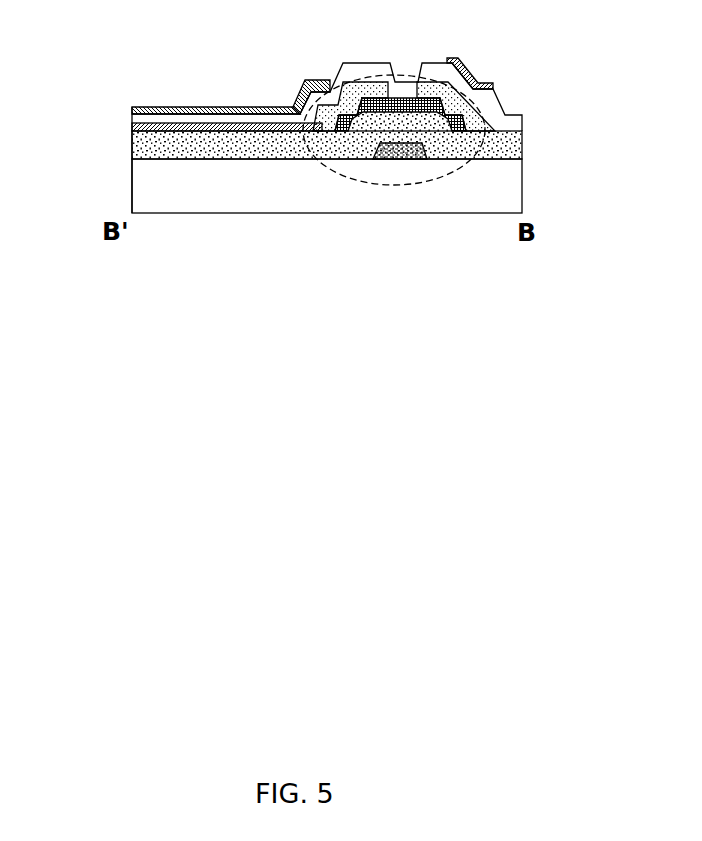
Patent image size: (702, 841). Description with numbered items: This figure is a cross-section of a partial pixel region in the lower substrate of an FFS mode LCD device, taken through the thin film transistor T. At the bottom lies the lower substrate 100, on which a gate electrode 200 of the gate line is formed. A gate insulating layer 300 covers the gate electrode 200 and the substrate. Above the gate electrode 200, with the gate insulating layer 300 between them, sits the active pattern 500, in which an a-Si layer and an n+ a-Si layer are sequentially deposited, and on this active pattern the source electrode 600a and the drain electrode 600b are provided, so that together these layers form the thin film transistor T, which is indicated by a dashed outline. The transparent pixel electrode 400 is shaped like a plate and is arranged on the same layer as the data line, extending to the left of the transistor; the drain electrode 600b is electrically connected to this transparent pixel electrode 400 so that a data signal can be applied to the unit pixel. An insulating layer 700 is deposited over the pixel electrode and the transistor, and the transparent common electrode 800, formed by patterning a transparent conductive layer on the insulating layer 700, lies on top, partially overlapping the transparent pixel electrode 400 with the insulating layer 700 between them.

The lower substrate 100 is at (138, 190).
The gate electrode 200 is at (398, 160).
The gate insulating layer 300 is at (132, 150).
The transparent pixel electrode 400 is at (132, 127).
The active pattern 500 is at (487, 80).
The source electrode 600a is at (432, 82).
The drain electrode 600b is at (370, 82).
The insulating layer 700 is at (318, 80).
The transparent common electrode 800 is at (191, 107).
The thin film transistor T is at (436, 180).